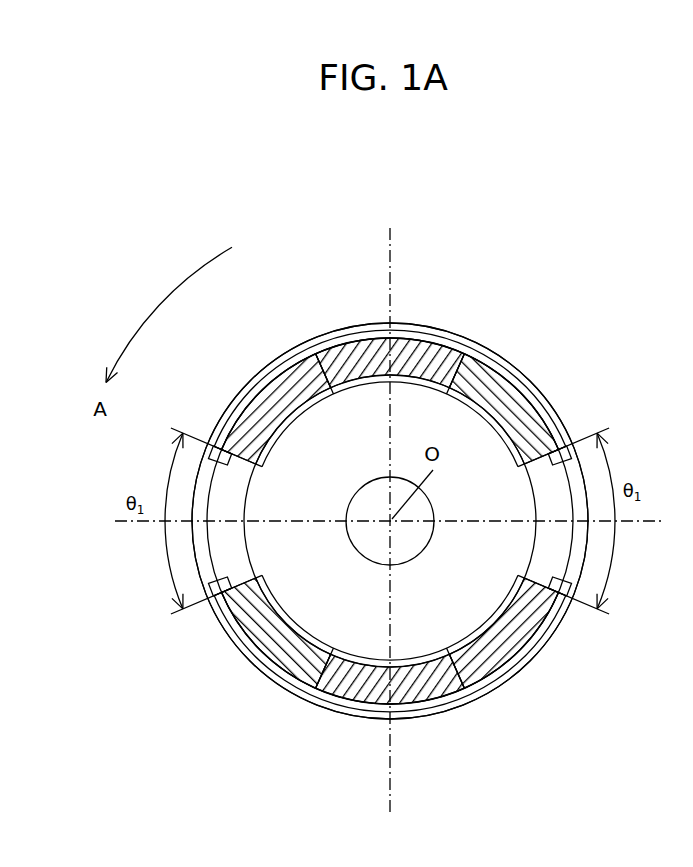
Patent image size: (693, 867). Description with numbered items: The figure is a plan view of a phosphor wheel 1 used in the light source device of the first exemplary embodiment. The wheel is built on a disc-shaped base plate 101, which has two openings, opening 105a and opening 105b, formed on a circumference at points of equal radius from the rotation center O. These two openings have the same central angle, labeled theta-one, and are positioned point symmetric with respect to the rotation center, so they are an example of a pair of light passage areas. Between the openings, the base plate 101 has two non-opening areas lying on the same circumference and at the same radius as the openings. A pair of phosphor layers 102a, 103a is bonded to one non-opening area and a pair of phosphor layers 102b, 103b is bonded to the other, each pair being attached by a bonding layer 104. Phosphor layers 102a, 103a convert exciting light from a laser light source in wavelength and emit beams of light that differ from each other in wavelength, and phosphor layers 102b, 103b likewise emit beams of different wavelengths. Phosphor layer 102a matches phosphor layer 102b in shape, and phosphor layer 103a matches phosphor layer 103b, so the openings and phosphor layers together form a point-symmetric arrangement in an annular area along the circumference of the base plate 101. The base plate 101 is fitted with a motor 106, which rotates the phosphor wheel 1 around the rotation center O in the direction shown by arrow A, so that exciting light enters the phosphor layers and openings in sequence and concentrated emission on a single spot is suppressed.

The phosphor wheel 1 is at (433, 205).
The base plate 101 is at (470, 570).
The phosphor layer 102a is at (423, 360).
The phosphor layer 102b is at (346, 672).
The phosphor layer 103a is at (503, 407).
The phosphor layer 103b is at (262, 628).
The bonding layer 104 is at (350, 340).
The opening 105a is at (547, 470).
The opening 105b is at (233, 557).
The motor 106 is at (365, 497).